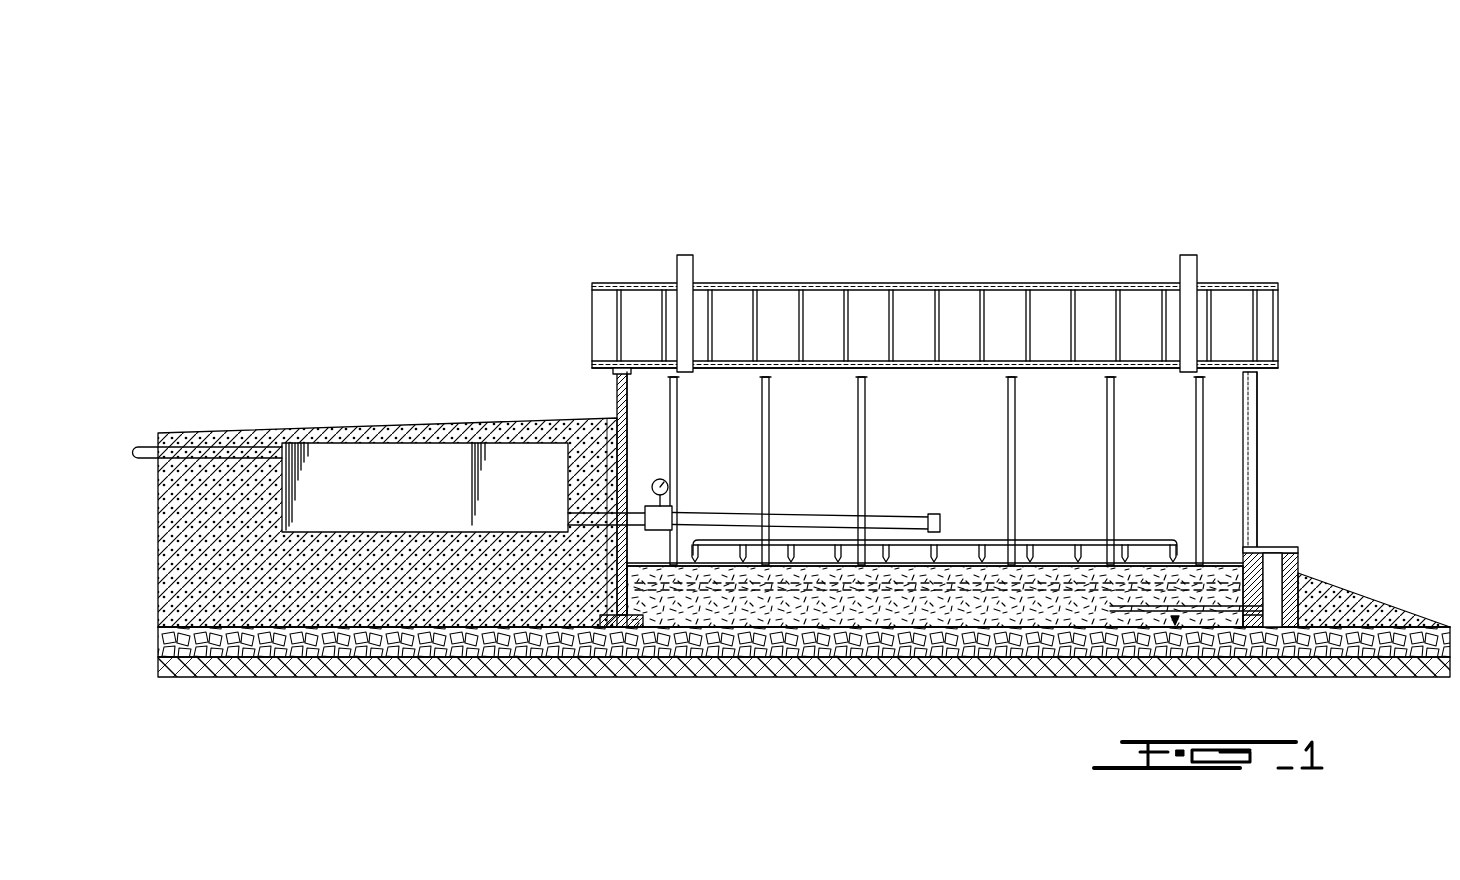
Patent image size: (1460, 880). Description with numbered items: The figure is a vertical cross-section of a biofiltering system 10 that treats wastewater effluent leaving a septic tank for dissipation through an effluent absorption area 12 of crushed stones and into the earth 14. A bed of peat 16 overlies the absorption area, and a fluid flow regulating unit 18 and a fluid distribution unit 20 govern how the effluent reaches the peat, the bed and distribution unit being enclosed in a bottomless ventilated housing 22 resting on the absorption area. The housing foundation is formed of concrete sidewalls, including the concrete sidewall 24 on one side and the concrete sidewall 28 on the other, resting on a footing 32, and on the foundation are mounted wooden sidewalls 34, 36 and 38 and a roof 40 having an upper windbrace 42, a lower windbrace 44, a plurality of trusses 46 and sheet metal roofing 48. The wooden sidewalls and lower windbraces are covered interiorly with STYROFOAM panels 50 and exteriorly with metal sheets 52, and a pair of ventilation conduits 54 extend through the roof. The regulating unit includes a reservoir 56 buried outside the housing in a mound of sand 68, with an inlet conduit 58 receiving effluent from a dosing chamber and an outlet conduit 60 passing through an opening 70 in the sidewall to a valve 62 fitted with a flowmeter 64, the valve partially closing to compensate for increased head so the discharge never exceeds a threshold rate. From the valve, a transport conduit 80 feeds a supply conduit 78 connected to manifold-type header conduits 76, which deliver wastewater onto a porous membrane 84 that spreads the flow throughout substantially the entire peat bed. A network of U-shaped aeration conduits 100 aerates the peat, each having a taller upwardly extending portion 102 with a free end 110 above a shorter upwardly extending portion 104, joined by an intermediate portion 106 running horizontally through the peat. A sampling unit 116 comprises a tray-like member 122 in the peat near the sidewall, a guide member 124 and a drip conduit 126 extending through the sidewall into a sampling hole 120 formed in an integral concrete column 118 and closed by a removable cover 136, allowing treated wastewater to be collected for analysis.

The biofiltering system 10 is at (485, 333).
The effluent absorption area 12 is at (955, 660).
The earth 14 is at (1003, 655).
The bed of peat 16 is at (797, 610).
The fluid flow regulating unit 18 is at (365, 418).
The fluid distribution unit 20 is at (780, 505).
The bottomless ventilated housing 22 is at (970, 456).
The concrete sidewall 24 is at (627, 430).
The concrete sidewall 28 is at (1245, 573).
The footing 32 is at (640, 627).
The wooden sidewall 34 is at (617, 383).
The wooden sidewall 36 is at (1228, 395).
The wooden sidewall 38 is at (1250, 428).
The roof 40 is at (992, 301).
The upper windbrace 42 is at (1090, 290).
The lower windbrace 44 is at (935, 369).
The trusses 46 is at (985, 305).
The sheet metal roofing 48 is at (1123, 290).
The STYROFOAM panels 50 is at (627, 380).
The metal sheets 52 is at (617, 407).
The ventilation conduits 54 is at (685, 257).
The reservoir 56 is at (407, 472).
The inlet conduit 58 is at (224, 447).
The outlet conduit 60 is at (615, 543).
The valve 62 is at (657, 526).
The flowmeter 64 is at (668, 487).
The mound of sand 68 is at (415, 585).
The opening 70 is at (648, 506).
The header conduits 76 is at (934, 520).
The supply conduit 78 is at (940, 525).
The transport conduit 80 is at (812, 520).
The porous membrane 84 is at (1220, 563).
The aeration conduits 100 is at (936, 471).
The upwardly extending portion 102 is at (677, 450).
The upwardly extending portion 104 is at (1176, 540).
The intermediate portion 106 is at (896, 635).
The free end 110 is at (857, 377).
The sampling unit 116 is at (1168, 630).
The column 118 is at (1298, 560).
The sampling hole 120 is at (1272, 575).
The tray-like member 122 is at (1120, 612).
The guide member 124 is at (1158, 673).
The drip conduit 126 is at (1205, 622).
The removable cover 136 is at (1298, 550).